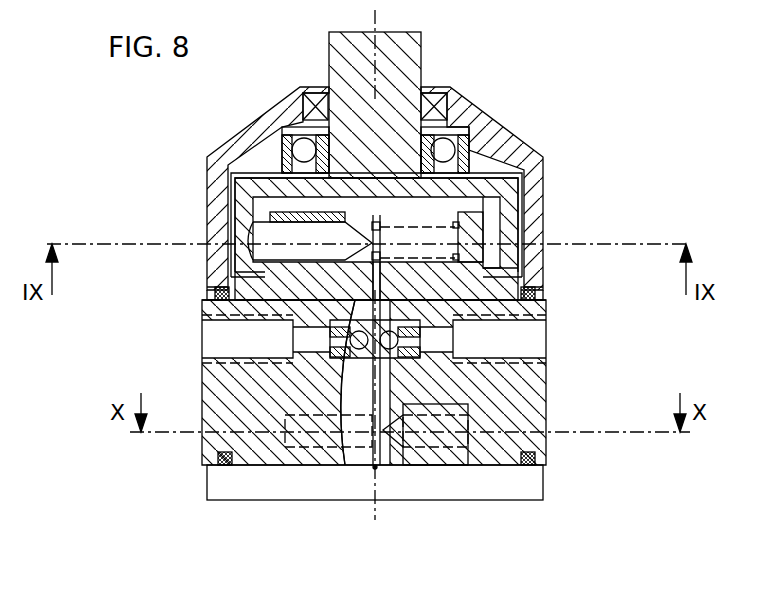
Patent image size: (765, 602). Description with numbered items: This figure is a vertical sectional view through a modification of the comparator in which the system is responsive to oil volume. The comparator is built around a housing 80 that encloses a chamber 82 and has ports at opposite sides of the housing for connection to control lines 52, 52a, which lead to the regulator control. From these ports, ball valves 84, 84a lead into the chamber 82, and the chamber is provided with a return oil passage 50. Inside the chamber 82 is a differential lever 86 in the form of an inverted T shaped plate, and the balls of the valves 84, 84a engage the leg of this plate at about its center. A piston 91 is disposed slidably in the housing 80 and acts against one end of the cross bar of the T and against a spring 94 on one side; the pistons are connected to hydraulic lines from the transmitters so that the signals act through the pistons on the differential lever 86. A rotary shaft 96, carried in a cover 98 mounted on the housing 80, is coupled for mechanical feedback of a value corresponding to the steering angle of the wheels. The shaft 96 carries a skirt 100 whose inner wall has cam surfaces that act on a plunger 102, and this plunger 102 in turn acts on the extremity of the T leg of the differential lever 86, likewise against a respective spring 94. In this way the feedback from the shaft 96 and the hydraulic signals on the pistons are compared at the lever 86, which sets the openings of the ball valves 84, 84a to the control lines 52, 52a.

The rotary shaft 96 is at (400, 52).
The cover 98 is at (505, 150).
The skirt 100 is at (507, 188).
The spring 94 is at (447, 213).
The plunger 102 is at (297, 250).
The chamber 82 is at (548, 300).
The control line 52 is at (183, 338).
The control line 52a is at (560, 340).
The ball valve 84 is at (330, 338).
The housing 80 is at (533, 400).
The differential lever 86 is at (357, 393).
The return oil passage 50 is at (375, 467).
The piston 91 is at (438, 440).
The ball valve 84a is at (470, 437).